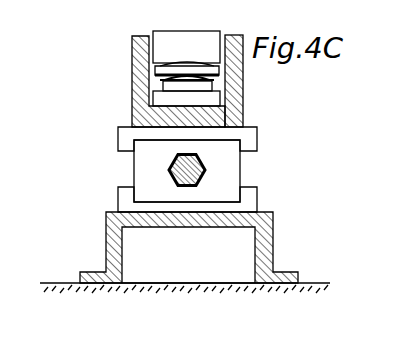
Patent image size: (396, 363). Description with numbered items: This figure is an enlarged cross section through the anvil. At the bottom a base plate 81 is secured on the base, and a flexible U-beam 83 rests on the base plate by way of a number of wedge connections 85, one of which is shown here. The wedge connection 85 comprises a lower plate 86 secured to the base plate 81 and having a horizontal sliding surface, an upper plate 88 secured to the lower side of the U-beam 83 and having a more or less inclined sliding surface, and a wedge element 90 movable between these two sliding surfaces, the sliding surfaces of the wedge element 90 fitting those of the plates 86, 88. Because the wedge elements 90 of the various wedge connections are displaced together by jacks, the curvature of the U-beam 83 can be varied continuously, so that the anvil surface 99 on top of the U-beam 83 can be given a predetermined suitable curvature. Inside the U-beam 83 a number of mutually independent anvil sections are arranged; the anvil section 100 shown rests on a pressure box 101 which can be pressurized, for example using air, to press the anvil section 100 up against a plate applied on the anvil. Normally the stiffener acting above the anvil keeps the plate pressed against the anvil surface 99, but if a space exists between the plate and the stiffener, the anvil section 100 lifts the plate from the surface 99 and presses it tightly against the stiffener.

The base plate 81 is at (105, 237).
The flexible U-beam 83 is at (133, 71).
The wedge connection 85 is at (266, 170).
The plate 86 is at (130, 205).
The plate 88 is at (118, 137).
The wedge element 90 is at (142, 163).
The anvil surface 99 is at (232, 35).
The anvil section 100 is at (160, 46).
The pressure box 101 is at (165, 81).